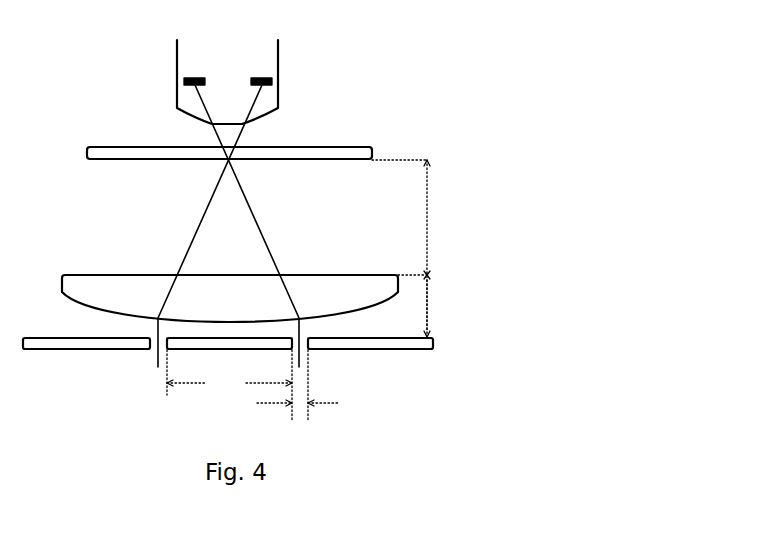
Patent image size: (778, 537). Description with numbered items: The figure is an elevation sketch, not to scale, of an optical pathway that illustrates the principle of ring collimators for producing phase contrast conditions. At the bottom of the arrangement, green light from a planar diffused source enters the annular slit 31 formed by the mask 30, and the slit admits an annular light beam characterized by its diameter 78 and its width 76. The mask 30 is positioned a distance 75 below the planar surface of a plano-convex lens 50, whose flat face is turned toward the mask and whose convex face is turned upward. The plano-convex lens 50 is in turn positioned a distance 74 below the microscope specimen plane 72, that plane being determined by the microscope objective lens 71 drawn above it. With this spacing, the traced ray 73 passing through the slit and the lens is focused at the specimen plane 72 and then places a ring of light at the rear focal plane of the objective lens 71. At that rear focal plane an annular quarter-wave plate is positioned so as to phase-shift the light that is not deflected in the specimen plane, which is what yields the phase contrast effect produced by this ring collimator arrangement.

The mask 30 is at (392, 348).
The annular slit 31 is at (307, 357).
The plano-convex lens 50 is at (372, 273).
The microscope objective lens 71 is at (275, 104).
The microscope specimen plane 72 is at (345, 146).
The traced ray 73 is at (253, 218).
The distance 74 is at (262, 78).
The distance 75 is at (430, 305).
The width 76 is at (340, 403).
The diameter 78 is at (229, 367).